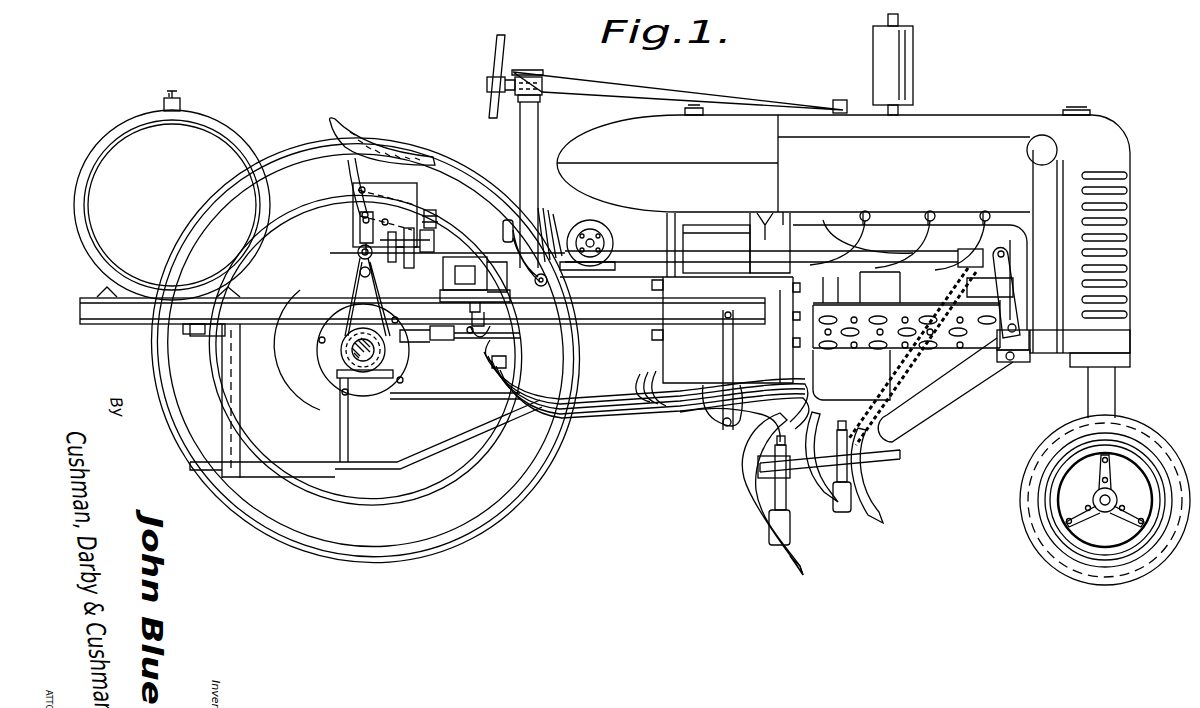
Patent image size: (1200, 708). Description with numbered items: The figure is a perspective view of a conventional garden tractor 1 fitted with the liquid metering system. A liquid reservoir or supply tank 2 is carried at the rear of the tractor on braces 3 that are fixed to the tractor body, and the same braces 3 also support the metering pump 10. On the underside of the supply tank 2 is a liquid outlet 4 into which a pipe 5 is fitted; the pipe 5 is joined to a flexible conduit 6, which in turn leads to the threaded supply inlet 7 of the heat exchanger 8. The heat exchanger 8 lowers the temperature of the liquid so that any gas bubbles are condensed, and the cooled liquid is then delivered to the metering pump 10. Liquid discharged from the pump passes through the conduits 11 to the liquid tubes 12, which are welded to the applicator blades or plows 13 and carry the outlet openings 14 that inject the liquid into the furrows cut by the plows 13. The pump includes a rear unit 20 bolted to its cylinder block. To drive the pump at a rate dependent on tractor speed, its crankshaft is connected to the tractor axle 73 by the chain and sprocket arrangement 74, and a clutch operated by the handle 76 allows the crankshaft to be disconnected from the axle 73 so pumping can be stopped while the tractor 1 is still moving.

The garden tractor 1 is at (977, 113).
The supply tank 2 is at (122, 128).
The braces 3 is at (125, 310).
The liquid outlet 4 is at (160, 326).
The pipe 5 is at (200, 328).
The flexible conduit 6 is at (472, 334).
The threaded supply inlet 7 is at (528, 340).
The heat exchanger 8 is at (548, 277).
The metering pump 10 is at (441, 251).
The conduits 11 is at (640, 373).
The liquid tubes 12 is at (778, 563).
The applicator blades or plows 13 is at (880, 518).
The outlet openings 14 is at (800, 578).
The rear unit 20 is at (338, 269).
The tractor axle 73 is at (355, 354).
The chain and sprocket arrangement 74 is at (358, 276).
The handle 76 is at (360, 228).